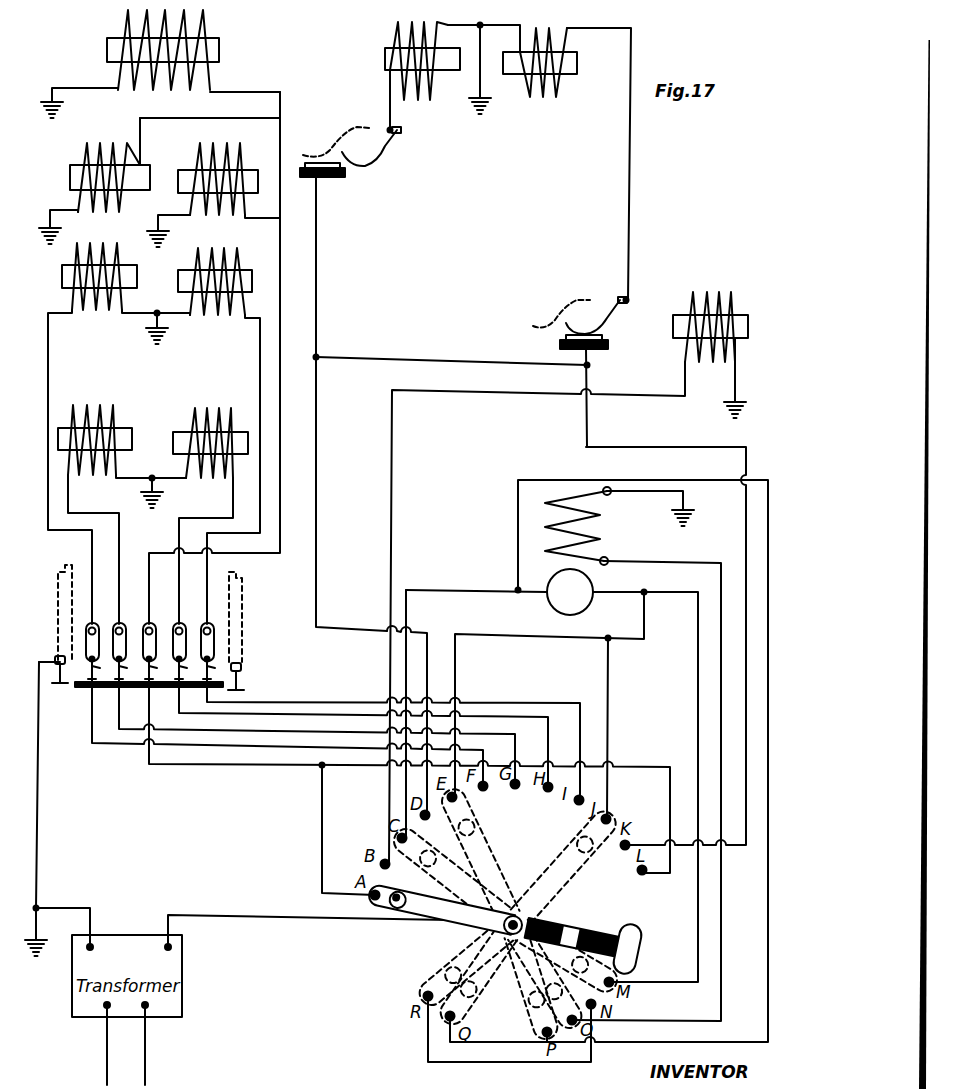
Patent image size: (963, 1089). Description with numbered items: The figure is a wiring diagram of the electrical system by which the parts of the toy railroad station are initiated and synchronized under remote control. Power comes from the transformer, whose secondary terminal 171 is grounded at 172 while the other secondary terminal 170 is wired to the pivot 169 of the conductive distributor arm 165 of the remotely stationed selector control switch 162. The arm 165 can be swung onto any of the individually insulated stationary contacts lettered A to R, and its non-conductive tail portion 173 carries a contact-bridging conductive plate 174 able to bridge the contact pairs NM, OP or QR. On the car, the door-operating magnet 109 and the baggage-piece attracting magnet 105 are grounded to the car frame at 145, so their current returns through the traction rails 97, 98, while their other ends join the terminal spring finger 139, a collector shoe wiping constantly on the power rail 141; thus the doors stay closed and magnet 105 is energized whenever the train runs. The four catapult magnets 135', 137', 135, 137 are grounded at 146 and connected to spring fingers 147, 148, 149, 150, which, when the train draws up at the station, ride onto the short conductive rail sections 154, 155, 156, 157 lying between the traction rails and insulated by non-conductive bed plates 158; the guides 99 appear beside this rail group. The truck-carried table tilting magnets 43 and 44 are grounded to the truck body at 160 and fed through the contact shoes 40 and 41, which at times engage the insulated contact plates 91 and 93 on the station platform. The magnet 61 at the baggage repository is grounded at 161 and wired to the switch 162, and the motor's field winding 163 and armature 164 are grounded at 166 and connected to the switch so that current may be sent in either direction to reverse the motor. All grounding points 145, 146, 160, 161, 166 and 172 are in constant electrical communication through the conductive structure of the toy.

The door-operating magnet 109 is at (222, 34).
The grounding point 145 is at (66, 123).
The baggage-piece attracting magnet 105 is at (145, 160).
The catapult magnet 137 is at (225, 275).
The catapult magnet 135' is at (97, 292).
The grounding point 146 is at (165, 346).
The catapult magnet 137' is at (95, 425).
The catapult magnet 135 is at (210, 427).
The table tilting magnet 43 is at (390, 44).
The table tilting magnet 44 is at (566, 92).
The grounding point 160 is at (490, 118).
The contact shoe 40 is at (372, 128).
The electric contact plate 91 is at (345, 172).
The contact shoe 41 is at (603, 300).
The contact plate 93 is at (605, 338).
The magnet 61 is at (738, 310).
The grounding point 161 is at (748, 408).
The field winding 163 is at (588, 526).
The grounding point 166 is at (694, 516).
The armature 164 is at (570, 592).
The guide 99 is at (56, 614).
The traction rail 98 is at (55, 658).
The traction rail 97 is at (243, 666).
The bed plate 158 is at (82, 690).
The spring finger 147 is at (98, 628).
The spring finger 148 is at (125, 628).
The terminal spring finger 139 is at (155, 628).
The spring finger 149 is at (185, 628).
The spring finger 150 is at (213, 628).
The conductive rail section 154 is at (109, 673).
The conductive rail section 155 is at (136, 673).
The power rail 141 is at (166, 673).
The conductive rail section 156 is at (196, 673).
The conductive rail section 157 is at (225, 673).
The secondary terminal 171 is at (107, 947).
The secondary terminal 170 is at (154, 947).
The grounding point 172 is at (32, 962).
The selector control switch 162 is at (440, 936).
The distributor arm 165 is at (441, 909).
The tail portion 173 is at (588, 924).
The contact-bridging conductive plate 174 is at (620, 948).
The pivot 169 is at (508, 915).